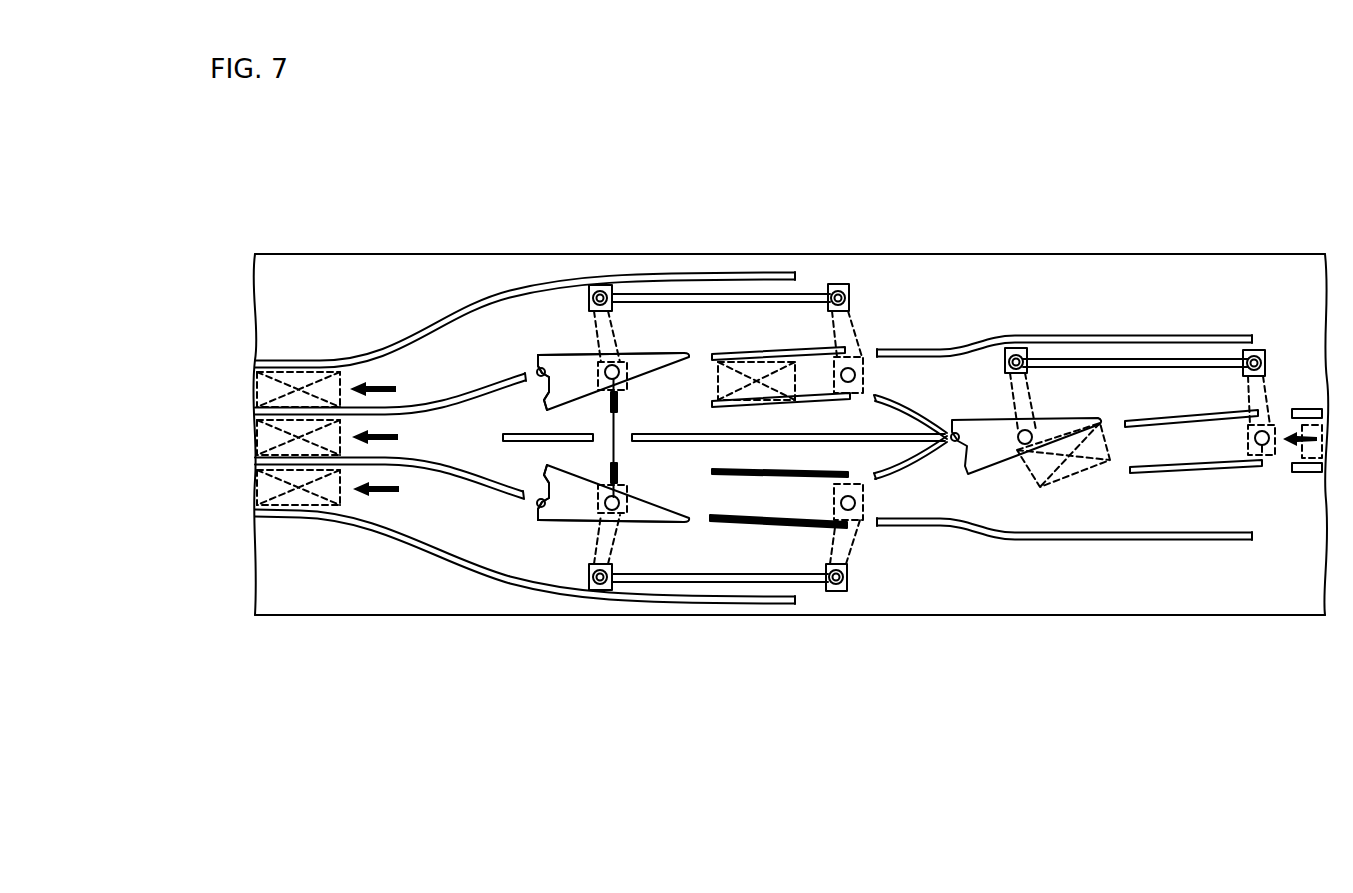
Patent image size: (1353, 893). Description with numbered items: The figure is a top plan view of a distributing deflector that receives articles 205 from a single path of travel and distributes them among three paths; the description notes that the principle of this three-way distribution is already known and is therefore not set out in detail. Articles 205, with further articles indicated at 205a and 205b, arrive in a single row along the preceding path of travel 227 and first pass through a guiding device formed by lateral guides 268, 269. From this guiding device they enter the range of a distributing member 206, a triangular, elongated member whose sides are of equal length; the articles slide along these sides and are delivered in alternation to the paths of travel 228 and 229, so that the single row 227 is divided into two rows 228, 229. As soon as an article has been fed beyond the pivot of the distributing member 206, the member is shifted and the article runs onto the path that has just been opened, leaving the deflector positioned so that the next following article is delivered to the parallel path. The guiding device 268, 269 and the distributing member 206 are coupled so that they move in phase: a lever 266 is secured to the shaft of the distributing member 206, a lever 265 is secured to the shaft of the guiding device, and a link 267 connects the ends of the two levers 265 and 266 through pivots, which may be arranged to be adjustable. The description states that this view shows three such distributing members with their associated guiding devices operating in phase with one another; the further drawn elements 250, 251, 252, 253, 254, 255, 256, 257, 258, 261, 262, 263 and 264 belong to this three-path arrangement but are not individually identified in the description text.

The articles 205 is at (757, 385).
The article 205a is at (1053, 467).
The article 205b is at (1313, 463).
The distributing member 206 is at (1053, 428).
The preceding path of travel 227 is at (1288, 453).
The path of travel 228 is at (928, 382).
The path of travel 229 is at (927, 478).
The upper switch tongue 250 is at (648, 360).
The lower switch tongue 251 is at (662, 513).
The lower pivot pin 252 is at (622, 508).
The upper pivot pin 253 is at (618, 362).
The upper middle channel 254 is at (520, 405).
The lower middle channel 255 is at (515, 462).
The upper channel 256 is at (430, 377).
The lower channel 257 is at (505, 543).
The inlet channel 258 is at (360, 440).
The upper guide edge 261 is at (580, 357).
The lower guide edge 262 is at (647, 518).
The upper tongue head 263 is at (573, 362).
The lower tongue head 264 is at (583, 485).
The lever 265 is at (850, 322).
The lever 266 is at (603, 291).
The link 267 is at (757, 298).
The lateral guide 268 is at (804, 350).
The lateral guide 269 is at (780, 397).